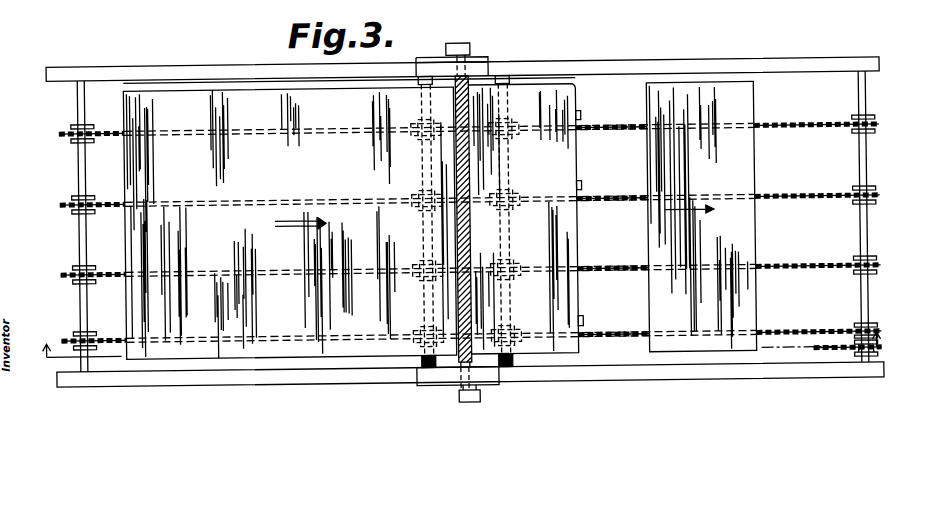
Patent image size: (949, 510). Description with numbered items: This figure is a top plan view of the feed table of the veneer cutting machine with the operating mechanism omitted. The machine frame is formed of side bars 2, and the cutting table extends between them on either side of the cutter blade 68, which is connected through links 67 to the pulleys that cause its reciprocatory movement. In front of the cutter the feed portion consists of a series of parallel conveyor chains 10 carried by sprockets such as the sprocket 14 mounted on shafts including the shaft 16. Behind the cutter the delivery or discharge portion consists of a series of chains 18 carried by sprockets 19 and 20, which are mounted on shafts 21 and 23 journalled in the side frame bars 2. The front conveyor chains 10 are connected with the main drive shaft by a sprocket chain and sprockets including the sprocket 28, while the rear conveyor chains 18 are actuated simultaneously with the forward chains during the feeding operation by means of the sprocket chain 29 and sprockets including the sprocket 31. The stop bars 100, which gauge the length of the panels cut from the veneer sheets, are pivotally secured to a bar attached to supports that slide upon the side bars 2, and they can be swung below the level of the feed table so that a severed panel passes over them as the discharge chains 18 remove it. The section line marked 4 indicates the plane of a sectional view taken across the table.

The side bars 2 is at (139, 66).
The section line 4- 4 is at (482, 352).
The conveyor chains 10 is at (112, 203).
The sprocket 14 is at (415, 194).
The shaft 16 is at (418, 76).
The chains 18 is at (577, 248).
The sprocket 19 is at (517, 197).
The sprocket 20 is at (855, 262).
The shaft 21 is at (510, 76).
The shaft 23 is at (860, 219).
The sprocket 28 is at (450, 372).
The sprocket chain 29 is at (828, 358).
The sprocket 31 is at (880, 350).
The links 67 is at (463, 43).
The cutter blade 68 is at (457, 300).
The stop bars 100 is at (580, 116).